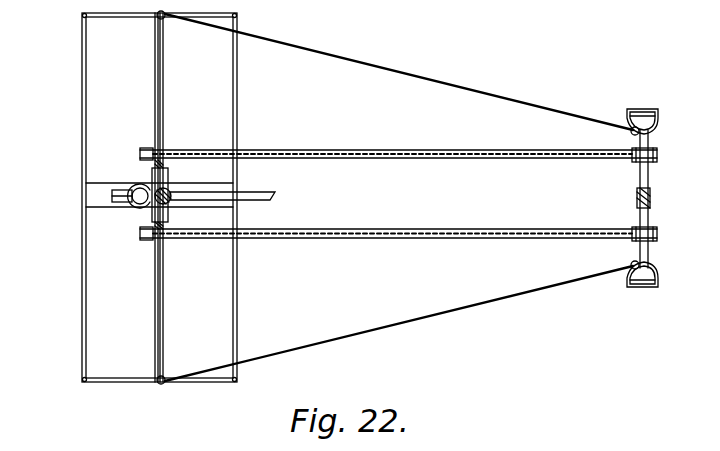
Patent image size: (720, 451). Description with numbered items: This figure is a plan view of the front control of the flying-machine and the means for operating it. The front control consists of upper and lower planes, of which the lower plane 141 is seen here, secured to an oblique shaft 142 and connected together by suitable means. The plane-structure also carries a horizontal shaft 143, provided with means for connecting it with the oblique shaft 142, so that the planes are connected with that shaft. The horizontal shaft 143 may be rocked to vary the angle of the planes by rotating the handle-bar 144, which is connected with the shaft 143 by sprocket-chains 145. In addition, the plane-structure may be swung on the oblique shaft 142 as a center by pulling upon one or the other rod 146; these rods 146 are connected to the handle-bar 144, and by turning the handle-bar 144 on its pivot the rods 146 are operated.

The lower plane 141 is at (107, 58).
The oblique shaft 142 is at (143, 205).
The horizontal shaft 143 is at (165, 107).
The handle-bar 144 is at (650, 175).
The sprocket-chains 145 is at (533, 160).
The rods 146 is at (478, 93).